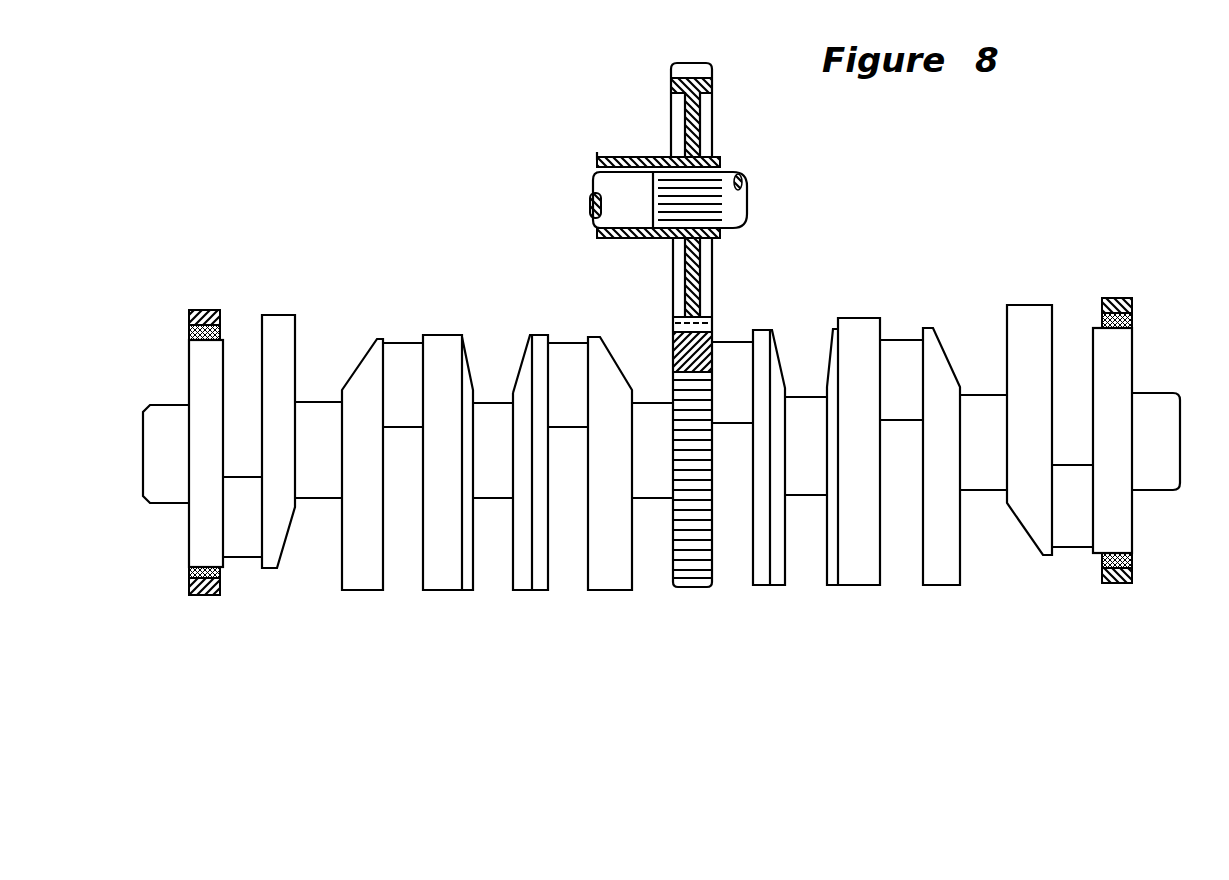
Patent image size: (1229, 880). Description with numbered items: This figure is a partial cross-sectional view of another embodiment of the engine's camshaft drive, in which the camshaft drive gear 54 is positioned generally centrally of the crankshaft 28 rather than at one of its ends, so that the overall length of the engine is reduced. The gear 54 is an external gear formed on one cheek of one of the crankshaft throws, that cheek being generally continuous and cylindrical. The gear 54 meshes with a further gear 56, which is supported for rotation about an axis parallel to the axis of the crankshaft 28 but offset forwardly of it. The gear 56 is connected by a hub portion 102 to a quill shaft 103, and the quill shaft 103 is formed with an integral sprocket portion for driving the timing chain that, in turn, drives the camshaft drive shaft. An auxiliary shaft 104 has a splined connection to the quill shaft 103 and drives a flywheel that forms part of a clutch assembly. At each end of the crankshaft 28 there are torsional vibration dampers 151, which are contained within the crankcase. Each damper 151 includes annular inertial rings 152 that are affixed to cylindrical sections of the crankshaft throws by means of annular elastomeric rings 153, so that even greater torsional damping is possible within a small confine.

The crankshaft 28 is at (172, 422).
The camshaft drive gear 54 is at (694, 588).
The gear 56 is at (740, 190).
The hub portion 102 is at (703, 263).
The quill shaft 103 is at (633, 240).
The auxiliary shaft 104 is at (588, 207).
The torsional vibration damper 151 is at (657, 488).
The annular inertial ring 152 is at (200, 597).
The annular elastomeric ring 153 is at (222, 580).